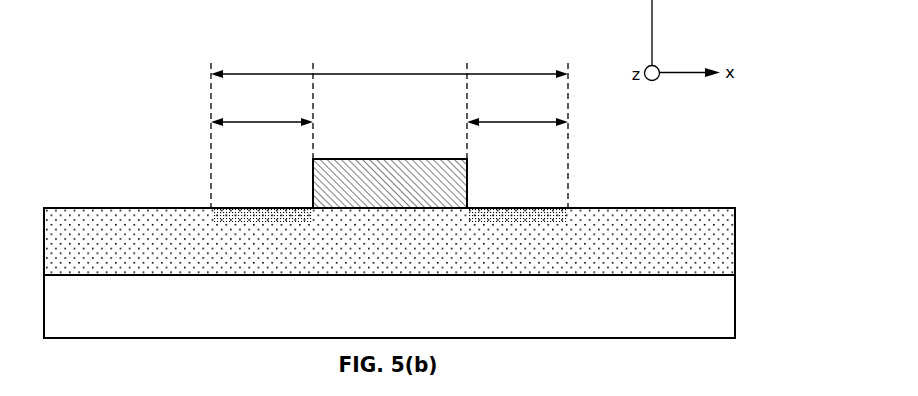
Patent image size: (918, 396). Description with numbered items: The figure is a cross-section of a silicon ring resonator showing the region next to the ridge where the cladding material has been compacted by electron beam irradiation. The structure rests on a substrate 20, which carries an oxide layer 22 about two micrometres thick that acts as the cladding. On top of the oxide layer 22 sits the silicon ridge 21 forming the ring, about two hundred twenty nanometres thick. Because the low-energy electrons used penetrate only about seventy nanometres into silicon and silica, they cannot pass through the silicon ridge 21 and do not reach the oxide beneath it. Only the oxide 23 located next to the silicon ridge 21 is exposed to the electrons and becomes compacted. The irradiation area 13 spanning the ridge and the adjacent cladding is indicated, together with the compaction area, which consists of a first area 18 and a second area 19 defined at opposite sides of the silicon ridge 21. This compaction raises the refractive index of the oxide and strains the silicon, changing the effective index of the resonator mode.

The irradiation area 13 is at (389, 63).
The first area 18 is at (262, 110).
The second area 19 is at (517, 110).
The substrate 20 is at (389, 306).
The silicon ridge 21 is at (390, 183).
The oxide layer 22 is at (389, 241).
The oxide next to the silicon ridges 23 is at (263, 210).